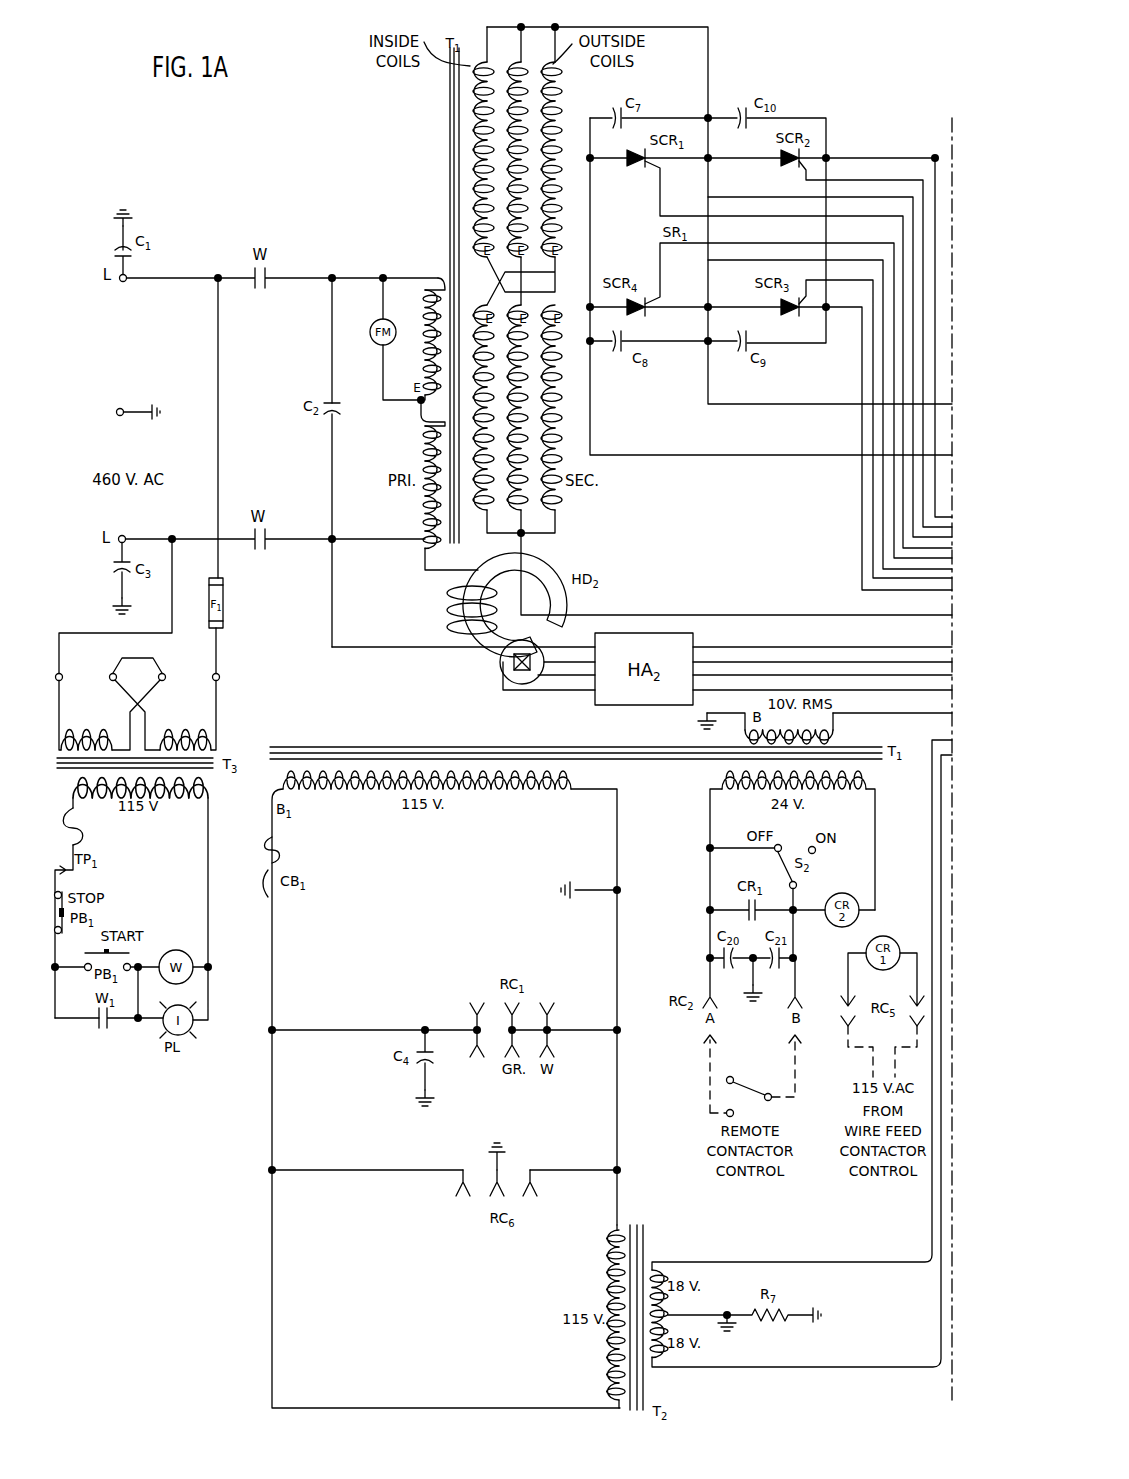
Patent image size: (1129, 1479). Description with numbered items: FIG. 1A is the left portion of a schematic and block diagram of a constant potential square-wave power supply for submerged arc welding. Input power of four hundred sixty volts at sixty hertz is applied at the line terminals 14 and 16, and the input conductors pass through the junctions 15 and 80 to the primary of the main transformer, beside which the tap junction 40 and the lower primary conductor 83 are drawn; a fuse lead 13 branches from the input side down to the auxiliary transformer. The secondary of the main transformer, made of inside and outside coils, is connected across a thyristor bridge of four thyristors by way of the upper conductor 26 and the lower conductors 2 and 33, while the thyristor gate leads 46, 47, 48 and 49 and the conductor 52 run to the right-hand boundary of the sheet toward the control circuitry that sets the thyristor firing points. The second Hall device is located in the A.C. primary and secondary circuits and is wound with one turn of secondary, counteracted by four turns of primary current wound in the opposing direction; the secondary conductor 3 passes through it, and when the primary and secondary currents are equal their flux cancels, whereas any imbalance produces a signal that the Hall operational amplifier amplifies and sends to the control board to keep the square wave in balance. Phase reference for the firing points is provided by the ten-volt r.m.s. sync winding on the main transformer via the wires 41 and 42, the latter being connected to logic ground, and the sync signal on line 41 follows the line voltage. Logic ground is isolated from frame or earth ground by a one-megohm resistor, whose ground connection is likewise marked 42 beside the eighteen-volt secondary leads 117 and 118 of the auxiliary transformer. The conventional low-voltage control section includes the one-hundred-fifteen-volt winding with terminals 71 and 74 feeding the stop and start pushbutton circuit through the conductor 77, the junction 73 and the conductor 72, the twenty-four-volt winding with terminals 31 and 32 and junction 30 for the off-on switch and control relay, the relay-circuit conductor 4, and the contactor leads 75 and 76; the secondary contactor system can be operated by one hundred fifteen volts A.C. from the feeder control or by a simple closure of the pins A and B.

The conductor 2 is at (830, 261).
The conductor 3 is at (734, 562).
The conductor 4 is at (594, 909).
The conductor 13 is at (225, 654).
The input terminal line 14 is at (169, 289).
The junction 15 is at (321, 338).
The input terminal line 16 is at (146, 531).
The conductor 26 is at (597, 70).
The junction 30 is at (805, 923).
The secondary terminal 31 is at (719, 818).
The secondary terminal 32 is at (864, 849).
The conductor 33 is at (771, 286).
The tap junction 40 is at (403, 381).
The wire 41 is at (892, 705).
The wire 42 is at (719, 1022).
The gate lead 46 is at (798, 354).
The gate lead 47 is at (798, 400).
The gate lead 48 is at (875, 344).
The gate lead 49 is at (875, 435).
The conductor 52 is at (889, 325).
The secondary terminal 71 is at (83, 805).
The conductor 72 is at (77, 1008).
The junction 73 is at (146, 981).
The secondary terminal 74 is at (196, 881).
The lead 75 is at (857, 1015).
The lead 76 is at (909, 1015).
The conductor 77 is at (53, 869).
The junction 80 is at (365, 531).
The conductor 83 is at (451, 559).
The secondary lead 117 is at (802, 1005).
The secondary lead 118 is at (802, 1072).